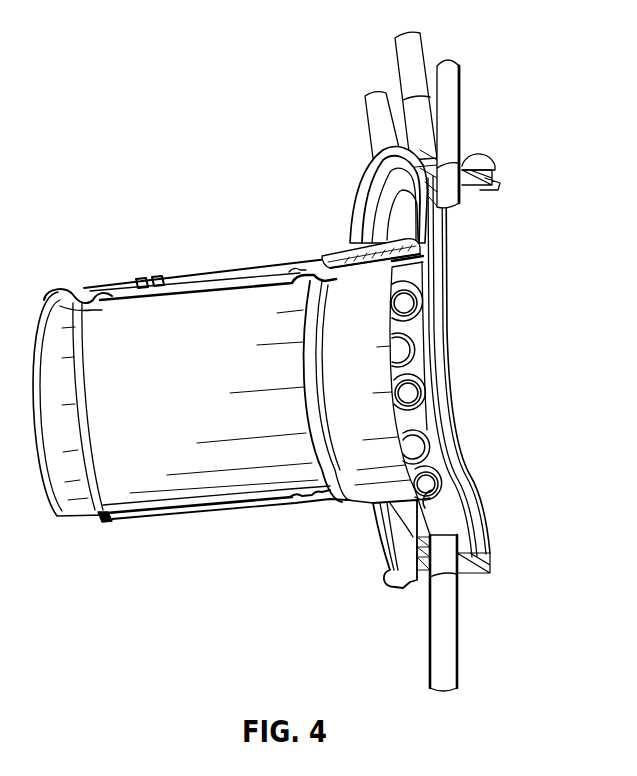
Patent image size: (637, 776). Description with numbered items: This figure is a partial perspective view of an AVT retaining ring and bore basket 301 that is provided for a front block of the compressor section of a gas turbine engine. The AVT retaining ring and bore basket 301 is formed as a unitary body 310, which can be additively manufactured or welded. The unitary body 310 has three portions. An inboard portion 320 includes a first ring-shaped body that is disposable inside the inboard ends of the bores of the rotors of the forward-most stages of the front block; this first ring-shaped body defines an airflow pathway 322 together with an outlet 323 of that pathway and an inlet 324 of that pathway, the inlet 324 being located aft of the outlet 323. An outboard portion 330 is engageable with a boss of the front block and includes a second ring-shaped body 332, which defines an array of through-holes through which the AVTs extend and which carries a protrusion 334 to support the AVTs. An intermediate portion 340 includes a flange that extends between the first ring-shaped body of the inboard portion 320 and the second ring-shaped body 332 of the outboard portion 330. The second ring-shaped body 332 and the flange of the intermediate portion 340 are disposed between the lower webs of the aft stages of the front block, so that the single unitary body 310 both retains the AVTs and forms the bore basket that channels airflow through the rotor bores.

The AVT retaining ring and bore basket 301 is at (249, 238).
The unitary body 310 is at (76, 292).
The inboard portion 320 is at (158, 270).
The airflow pathway 322 is at (235, 508).
The outlet 323 is at (113, 524).
The inlet 324 is at (299, 503).
The outboard portion 330 is at (357, 195).
The second ring-shaped body 332 is at (497, 183).
The protrusion 334 is at (356, 205).
The intermediate portion 340 is at (405, 537).